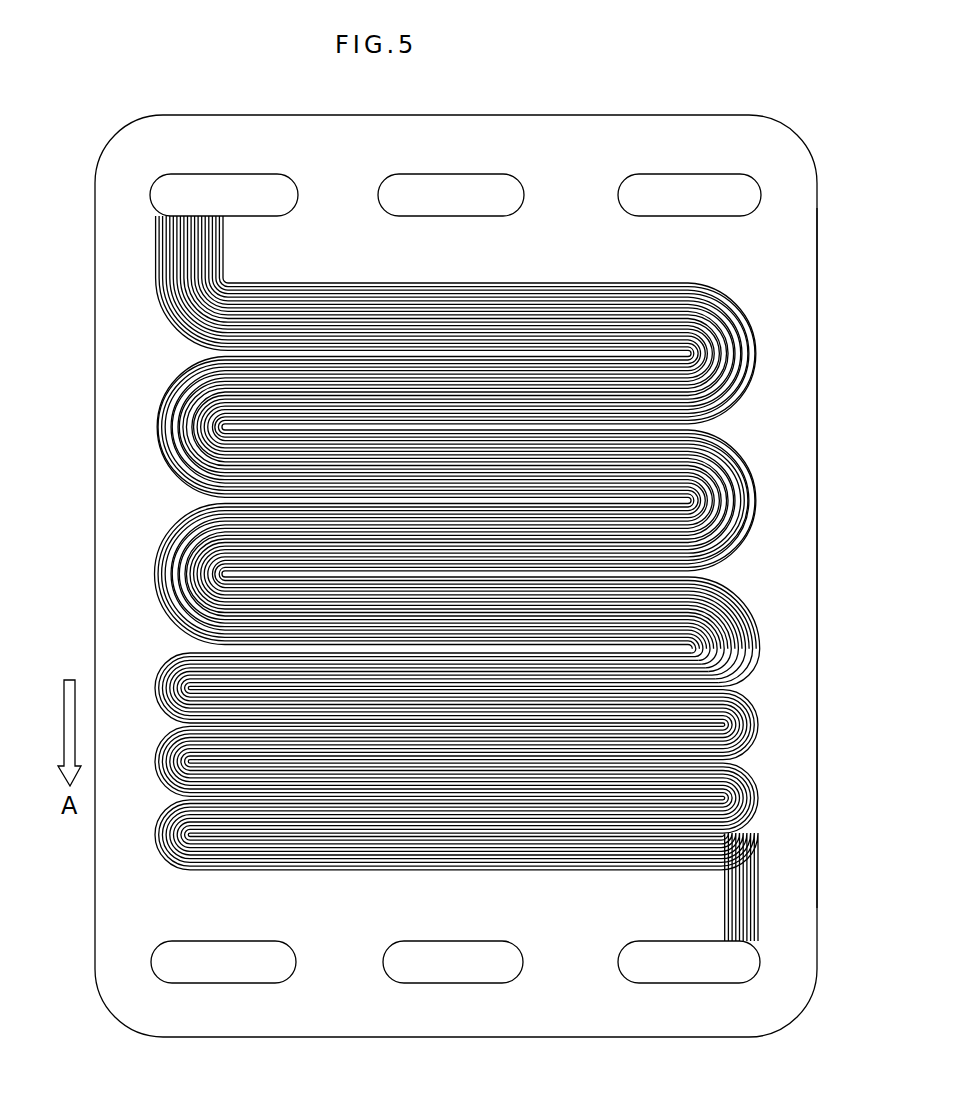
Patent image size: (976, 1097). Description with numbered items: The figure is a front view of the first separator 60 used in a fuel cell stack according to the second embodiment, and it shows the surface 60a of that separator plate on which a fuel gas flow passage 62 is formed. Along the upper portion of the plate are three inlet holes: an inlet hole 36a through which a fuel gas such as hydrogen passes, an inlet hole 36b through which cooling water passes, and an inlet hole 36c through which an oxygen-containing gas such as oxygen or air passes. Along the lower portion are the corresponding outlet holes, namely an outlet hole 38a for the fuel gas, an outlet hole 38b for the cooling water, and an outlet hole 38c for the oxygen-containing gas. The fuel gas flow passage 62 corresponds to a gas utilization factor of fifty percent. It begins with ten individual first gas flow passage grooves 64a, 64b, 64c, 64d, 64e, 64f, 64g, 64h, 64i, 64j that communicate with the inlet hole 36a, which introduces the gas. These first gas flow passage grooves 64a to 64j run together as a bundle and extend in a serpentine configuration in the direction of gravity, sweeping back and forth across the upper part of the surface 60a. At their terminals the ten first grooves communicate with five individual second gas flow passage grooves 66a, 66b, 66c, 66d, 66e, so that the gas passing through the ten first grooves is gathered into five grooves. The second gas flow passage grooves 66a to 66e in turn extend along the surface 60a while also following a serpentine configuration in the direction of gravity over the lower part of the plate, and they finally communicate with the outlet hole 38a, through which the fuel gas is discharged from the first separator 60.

The first separator 60 is at (592, 106).
The surface 60a is at (788, 214).
The inlet hole 36a is at (216, 188).
The inlet hole 36b is at (428, 188).
The inlet hole 36c is at (664, 183).
The outlet hole 38a is at (672, 960).
The outlet hole 38b is at (430, 960).
The outlet hole 38c is at (209, 960).
The fuel gas flow passage 62 is at (327, 273).
The first gas flow passage groove 64a is at (409, 267).
The first gas flow passage groove 64b is at (431, 285).
The first gas flow passage groove 64c is at (483, 267).
The first gas flow passage groove 64d is at (498, 292).
The first gas flow passage groove 64e is at (527, 292).
The first gas flow passage groove 64f is at (572, 296).
The first gas flow passage groove 64g is at (700, 325).
The first gas flow passage groove 64h is at (690, 340).
The first gas flow passage groove 64i is at (688, 350).
The first gas flow passage groove 64j is at (690, 365).
The second gas flow passage groove 66a is at (791, 683).
The second gas flow passage groove 66b is at (735, 740).
The second gas flow passage groove 66c is at (730, 775).
The second gas flow passage groove 66d is at (722, 790).
The second gas flow passage groove 66e is at (722, 805).